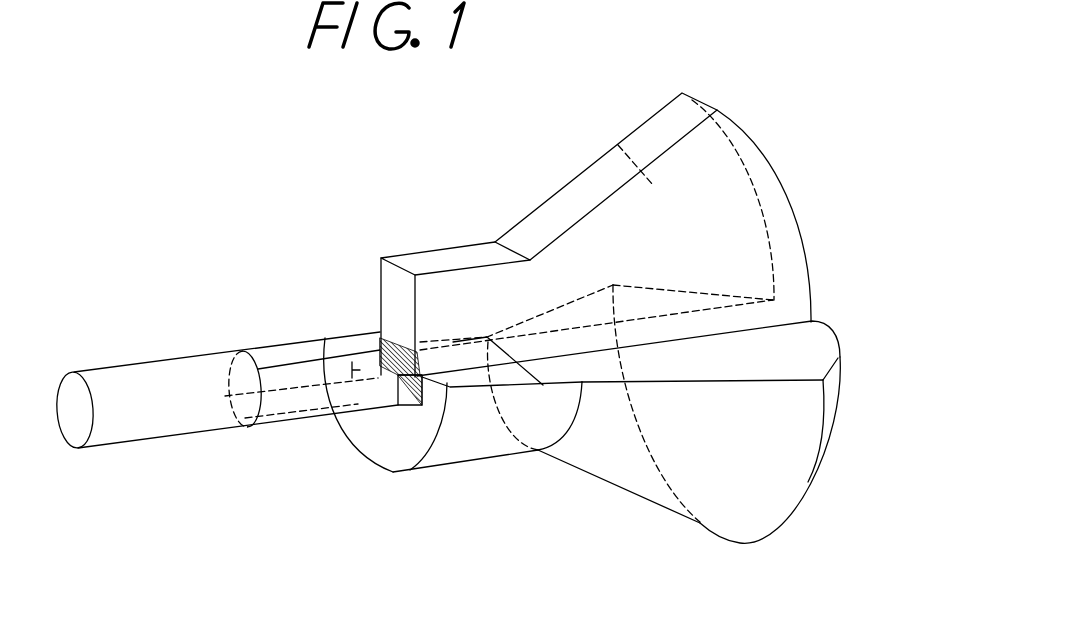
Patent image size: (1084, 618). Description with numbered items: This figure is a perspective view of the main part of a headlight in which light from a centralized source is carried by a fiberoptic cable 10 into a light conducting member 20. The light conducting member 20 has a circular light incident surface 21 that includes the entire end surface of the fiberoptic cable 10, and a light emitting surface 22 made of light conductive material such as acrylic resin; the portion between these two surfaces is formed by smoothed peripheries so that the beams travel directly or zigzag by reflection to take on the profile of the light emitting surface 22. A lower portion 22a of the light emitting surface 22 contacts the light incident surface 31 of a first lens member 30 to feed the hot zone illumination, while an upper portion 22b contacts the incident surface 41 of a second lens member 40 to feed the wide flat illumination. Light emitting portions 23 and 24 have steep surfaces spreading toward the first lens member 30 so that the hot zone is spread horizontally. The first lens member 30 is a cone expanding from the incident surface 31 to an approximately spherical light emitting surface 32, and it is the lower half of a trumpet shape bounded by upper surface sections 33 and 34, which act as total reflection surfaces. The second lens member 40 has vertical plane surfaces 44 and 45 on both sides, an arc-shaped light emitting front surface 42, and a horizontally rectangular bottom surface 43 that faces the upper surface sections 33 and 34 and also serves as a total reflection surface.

The fiberoptic cable 10 is at (130, 423).
The light conducting member 20 is at (296, 400).
The light incident surface 21 is at (249, 418).
The light emitting surface 22 is at (360, 382).
The lower portion of the light emitting surface 22a is at (370, 382).
The upper portion of the light emitting surface 22b is at (377, 333).
The light emitting portion 23 is at (398, 392).
The light emitting portion 24 is at (353, 348).
The first lens member 30 is at (617, 463).
The light incident surface 31 is at (400, 445).
The light emitting surface 32 is at (832, 397).
The upper surface section 33 is at (470, 373).
The upper surface section 34 is at (777, 350).
The second lens member 40 is at (558, 190).
The incident surface 41 is at (383, 260).
The light emitting front surface 42 is at (757, 142).
The bottom surface 43 is at (773, 297).
The vertical plane surface 44 is at (623, 143).
The vertical plane surface 45 is at (747, 217).